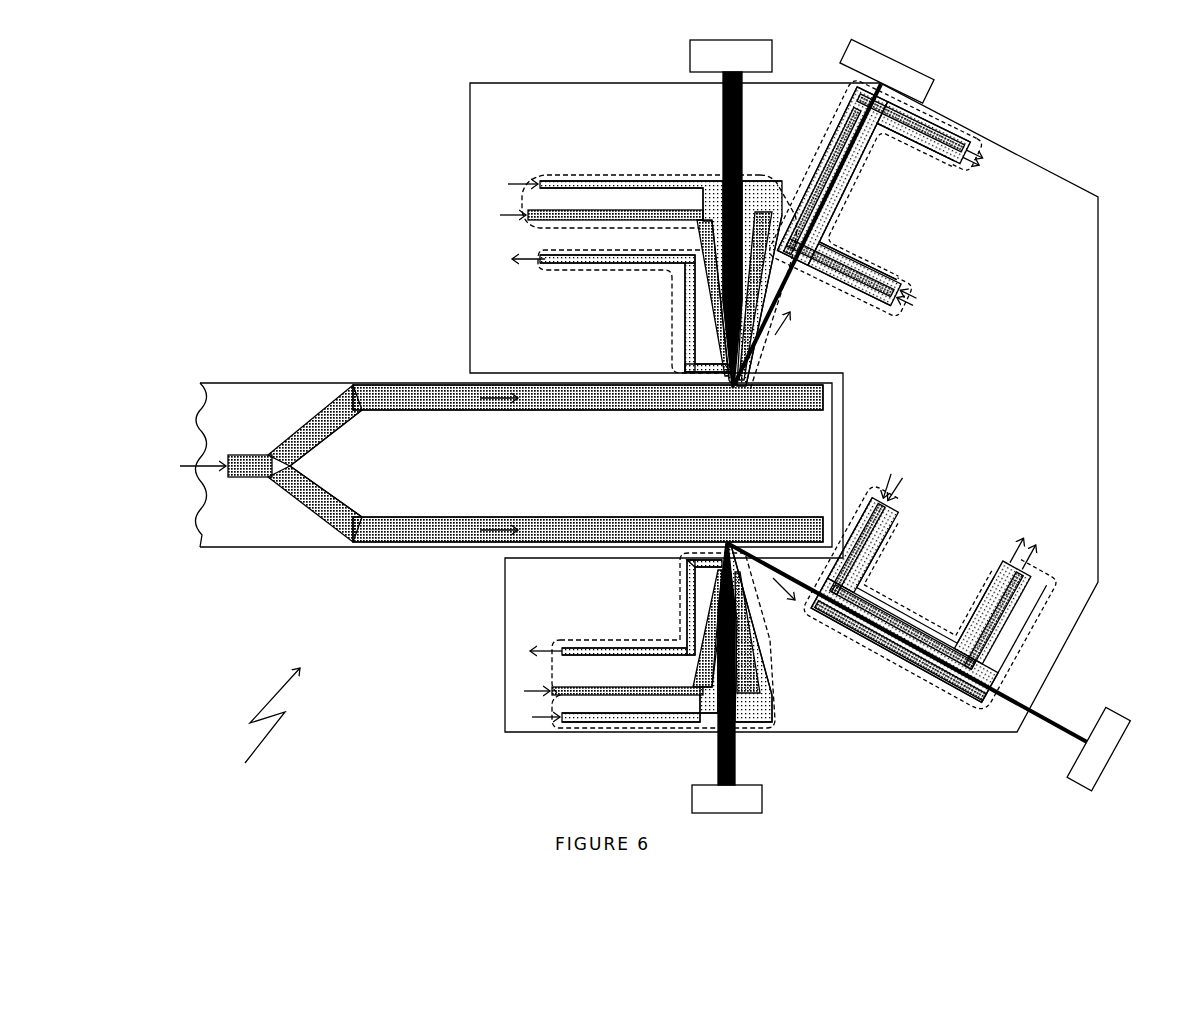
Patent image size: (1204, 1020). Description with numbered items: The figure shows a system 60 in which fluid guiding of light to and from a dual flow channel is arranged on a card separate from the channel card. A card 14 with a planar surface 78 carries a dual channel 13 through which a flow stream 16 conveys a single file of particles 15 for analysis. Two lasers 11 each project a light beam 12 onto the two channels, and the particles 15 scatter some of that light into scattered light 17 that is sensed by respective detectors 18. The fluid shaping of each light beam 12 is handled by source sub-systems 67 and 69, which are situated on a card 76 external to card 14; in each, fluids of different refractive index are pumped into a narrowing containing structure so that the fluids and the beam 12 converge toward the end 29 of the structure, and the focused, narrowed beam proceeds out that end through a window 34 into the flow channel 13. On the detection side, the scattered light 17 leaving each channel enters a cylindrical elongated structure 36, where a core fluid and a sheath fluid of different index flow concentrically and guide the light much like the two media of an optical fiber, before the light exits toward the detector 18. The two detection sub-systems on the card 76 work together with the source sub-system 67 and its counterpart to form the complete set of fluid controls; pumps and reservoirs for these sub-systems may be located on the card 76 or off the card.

The laser 11 is at (688, 46).
The light beam 12 is at (723, 140).
The flow channel 13 is at (420, 412).
The card 14 is at (290, 549).
The particles 15 is at (607, 412).
The flow stream 16 is at (225, 462).
The scattered light 17 is at (806, 275).
The detector 18 is at (936, 82).
The end of container 29 is at (745, 598).
The window 34 is at (713, 566).
The elongated structure 36 is at (840, 133).
The system 60 is at (262, 726).
The sub-system 67 is at (765, 707).
The sub-system 69 is at (670, 282).
The card 76 is at (1100, 492).
The planar surface 78 is at (333, 463).